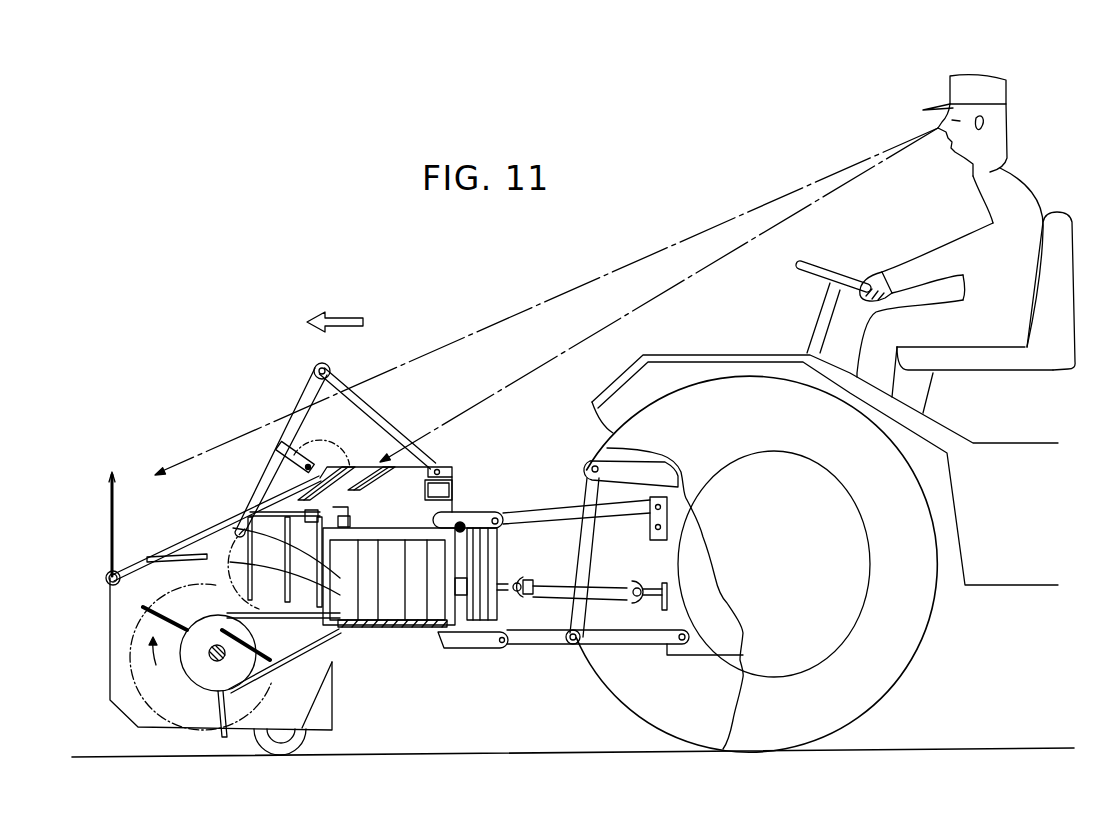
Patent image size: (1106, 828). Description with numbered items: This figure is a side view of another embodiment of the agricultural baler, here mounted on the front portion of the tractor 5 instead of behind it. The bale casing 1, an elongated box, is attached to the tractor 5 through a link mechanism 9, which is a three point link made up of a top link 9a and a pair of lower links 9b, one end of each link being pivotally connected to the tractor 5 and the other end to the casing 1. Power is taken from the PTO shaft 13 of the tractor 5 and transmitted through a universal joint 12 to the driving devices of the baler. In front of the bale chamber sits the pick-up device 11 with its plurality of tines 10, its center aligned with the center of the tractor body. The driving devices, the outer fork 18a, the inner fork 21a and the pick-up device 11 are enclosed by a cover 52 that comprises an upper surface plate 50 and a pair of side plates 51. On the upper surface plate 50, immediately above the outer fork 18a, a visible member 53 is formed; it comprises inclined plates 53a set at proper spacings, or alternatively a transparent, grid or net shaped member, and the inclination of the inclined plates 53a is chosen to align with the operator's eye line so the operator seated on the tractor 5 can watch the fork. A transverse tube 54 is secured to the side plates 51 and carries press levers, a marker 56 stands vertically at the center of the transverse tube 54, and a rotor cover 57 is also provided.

The bale casing 1 is at (417, 627).
The tractor 5 is at (1022, 562).
The link mechanism 9 is at (561, 600).
The top link 9a is at (522, 622).
The lower links 9b is at (507, 705).
The tines 10 is at (231, 716).
The pick-up device 11 is at (193, 684).
The universal joint 12 is at (547, 588).
The PTO shaft 13 is at (655, 583).
The outer fork 18a is at (353, 627).
The inner fork 21a is at (272, 493).
The upper surface plate 50 is at (425, 466).
The side plates 51 is at (117, 622).
The cover 52 is at (185, 523).
The visible member 53 is at (320, 478).
The inclined plates 53a is at (367, 465).
The transverse tube 54 is at (111, 576).
The marker 56 is at (108, 503).
The rotor cover 57 is at (190, 683).